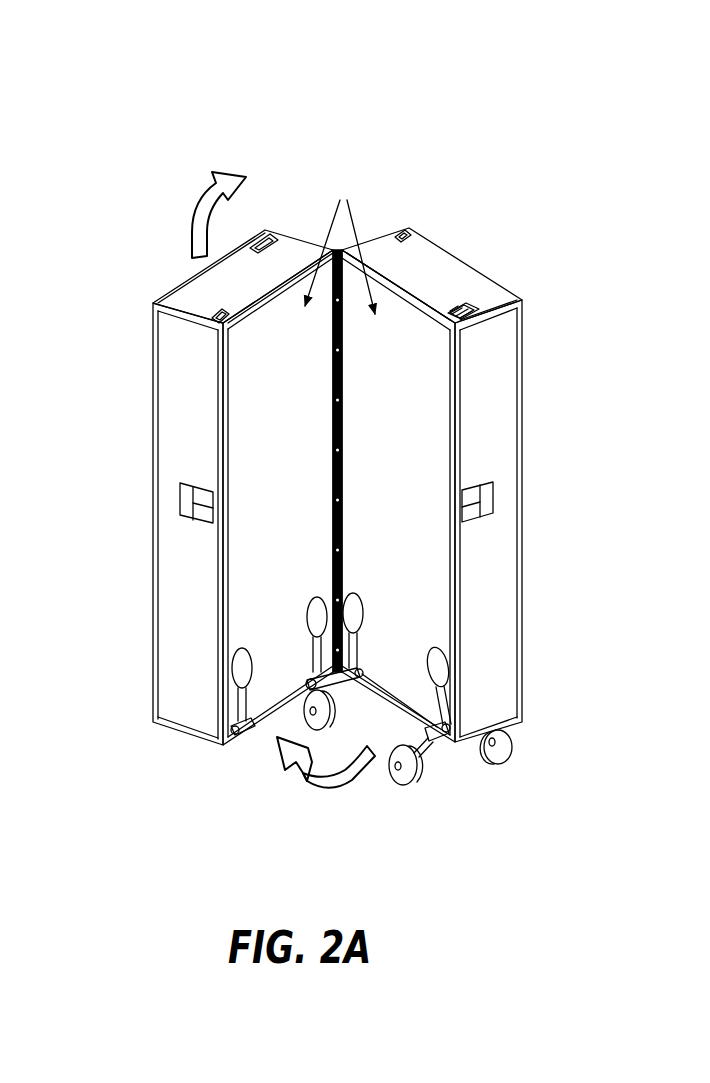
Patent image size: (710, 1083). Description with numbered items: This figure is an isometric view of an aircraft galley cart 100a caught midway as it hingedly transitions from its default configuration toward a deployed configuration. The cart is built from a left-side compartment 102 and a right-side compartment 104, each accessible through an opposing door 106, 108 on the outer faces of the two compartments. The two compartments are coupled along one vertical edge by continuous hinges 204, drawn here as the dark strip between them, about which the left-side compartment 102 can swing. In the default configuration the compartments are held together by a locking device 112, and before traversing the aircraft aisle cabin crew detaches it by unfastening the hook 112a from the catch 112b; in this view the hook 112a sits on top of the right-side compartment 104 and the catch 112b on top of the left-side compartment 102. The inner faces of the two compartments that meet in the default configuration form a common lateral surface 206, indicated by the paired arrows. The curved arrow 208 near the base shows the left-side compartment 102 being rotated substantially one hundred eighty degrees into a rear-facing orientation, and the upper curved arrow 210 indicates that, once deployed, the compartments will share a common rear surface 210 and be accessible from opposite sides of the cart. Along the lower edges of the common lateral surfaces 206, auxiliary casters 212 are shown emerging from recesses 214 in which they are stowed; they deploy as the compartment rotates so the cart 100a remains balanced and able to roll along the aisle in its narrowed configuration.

The galley cart 100a is at (61, 160).
The left-side compartment 102 is at (217, 297).
The right-side compartment 104 is at (472, 285).
The door 106 is at (173, 643).
The door 108 is at (493, 578).
The locking device 112 is at (470, 307).
The hook 112a is at (458, 308).
The catch 112b is at (216, 316).
The continuous hinges 204 is at (342, 481).
The common lateral surface 206 is at (340, 240).
The rotation of the left-side compartment 208 is at (311, 790).
The common rear surface 210 is at (192, 203).
The auxiliary casters 212 is at (417, 775).
The recesses 214 is at (448, 735).